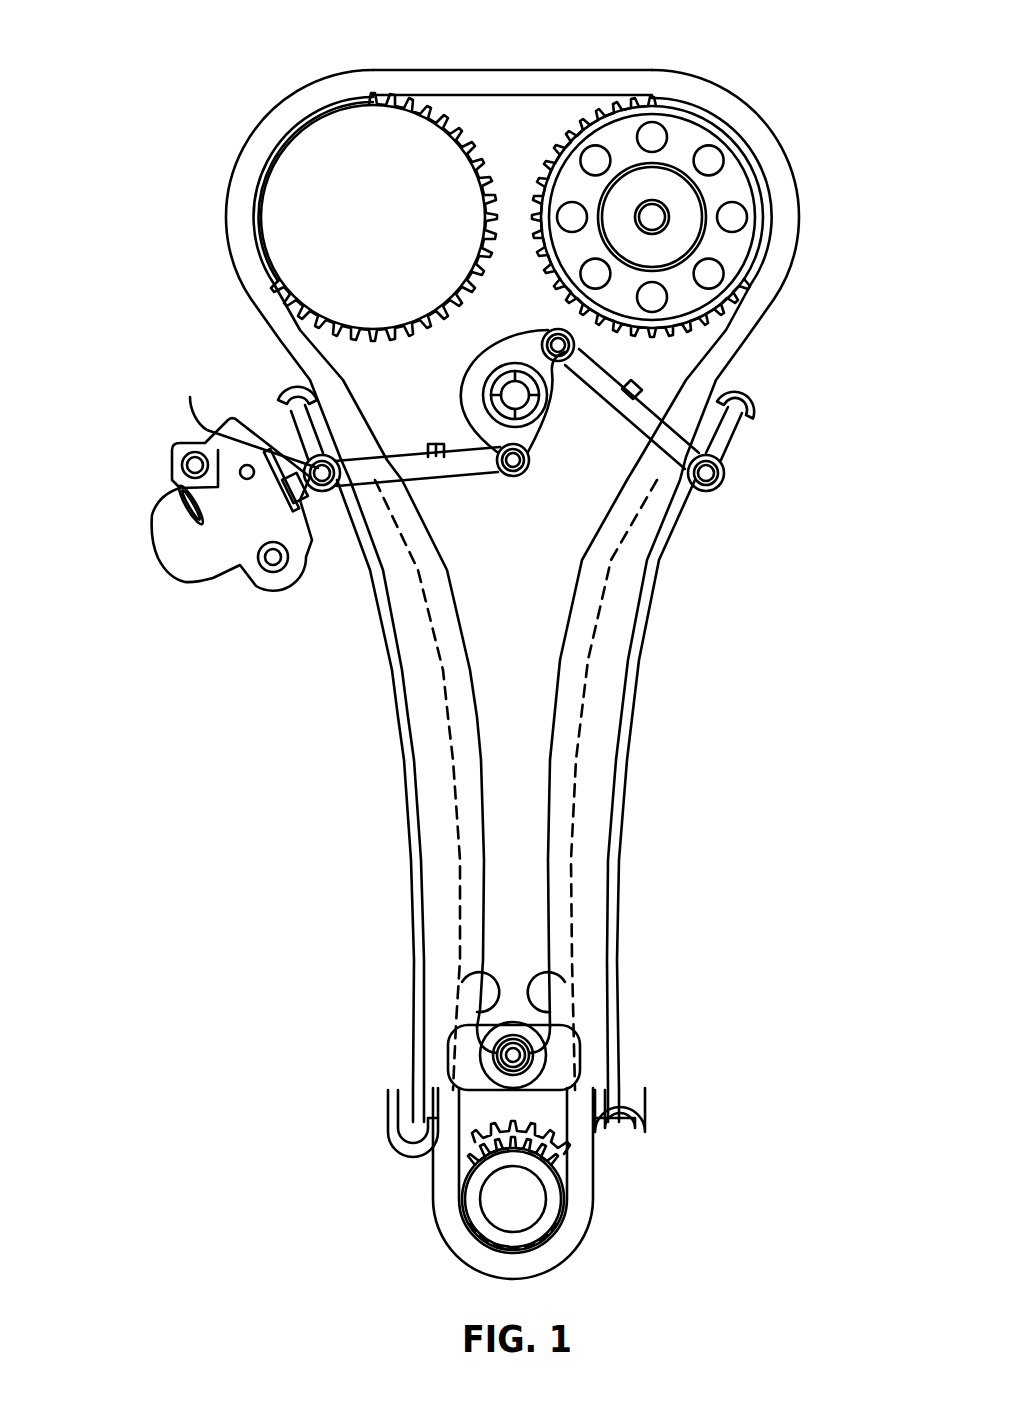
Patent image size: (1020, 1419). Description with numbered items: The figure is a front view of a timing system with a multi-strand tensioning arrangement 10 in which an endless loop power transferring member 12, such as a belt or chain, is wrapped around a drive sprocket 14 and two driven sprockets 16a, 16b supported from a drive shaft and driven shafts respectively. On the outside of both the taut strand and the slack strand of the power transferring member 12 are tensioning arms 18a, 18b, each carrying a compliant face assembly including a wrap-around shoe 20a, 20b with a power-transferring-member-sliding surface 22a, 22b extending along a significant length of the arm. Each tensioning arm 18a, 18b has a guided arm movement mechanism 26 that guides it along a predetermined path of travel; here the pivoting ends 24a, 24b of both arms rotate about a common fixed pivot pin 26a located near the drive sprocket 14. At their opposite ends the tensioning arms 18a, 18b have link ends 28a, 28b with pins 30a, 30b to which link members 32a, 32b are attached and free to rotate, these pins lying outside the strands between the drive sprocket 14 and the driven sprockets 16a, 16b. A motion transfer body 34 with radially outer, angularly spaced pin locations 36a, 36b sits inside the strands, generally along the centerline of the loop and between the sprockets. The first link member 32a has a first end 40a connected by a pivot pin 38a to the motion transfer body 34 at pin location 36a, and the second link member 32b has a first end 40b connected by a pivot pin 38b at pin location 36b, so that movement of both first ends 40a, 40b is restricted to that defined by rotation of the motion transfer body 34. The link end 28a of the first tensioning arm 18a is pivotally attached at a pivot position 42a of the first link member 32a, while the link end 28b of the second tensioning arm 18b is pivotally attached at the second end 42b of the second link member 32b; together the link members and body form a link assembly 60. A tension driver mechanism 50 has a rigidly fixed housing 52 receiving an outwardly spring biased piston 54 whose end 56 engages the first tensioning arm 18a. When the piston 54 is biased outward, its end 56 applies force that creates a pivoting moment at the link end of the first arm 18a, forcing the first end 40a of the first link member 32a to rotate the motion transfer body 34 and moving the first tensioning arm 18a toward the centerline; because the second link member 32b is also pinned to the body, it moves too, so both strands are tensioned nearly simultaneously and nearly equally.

The multi-strand tensioning arrangement 10 is at (256, 66).
The endless loop power transferring member 12 is at (255, 133).
The drive sprocket 14 is at (553, 1200).
The driven sprocket 16a is at (300, 185).
The driven sprocket 16b is at (735, 182).
The first tensioning arm 18a is at (412, 940).
The second tensioning arm 18b is at (612, 945).
The wrap-around shoe 20a is at (255, 372).
The wrap-around shoe 20b is at (794, 416).
The power-transferring-member-sliding surface 22a is at (458, 875).
The power-transferring-member-sliding surface 22b is at (570, 875).
The pivoting end 24a is at (465, 1003).
The pivoting end 24b is at (560, 1003).
The guided arm movement mechanism 26 is at (541, 1052).
The common fixed pivot pin 26a is at (498, 1060).
The link end 28a is at (266, 385).
The link end 28b is at (781, 423).
The pin 30a is at (325, 458).
The pin 30b is at (730, 472).
The first link member 32a is at (420, 481).
The second link member 32b is at (690, 358).
The motion transfer body 34 is at (470, 355).
The pin location 36a is at (515, 470).
The pin location 36b is at (550, 340).
The pivot pin 38a is at (520, 475).
The pivot pin 38b is at (562, 355).
The first end 40a is at (460, 432).
The first end 40b is at (740, 262).
The pivot position 42a is at (320, 505).
The second end 42b is at (722, 500).
The tension driver mechanism 50 is at (175, 506).
The rigidly fixed housing 52 is at (152, 500).
The piston 54 is at (300, 565).
The end 56 is at (245, 420).
The link assembly 60 is at (575, 455).